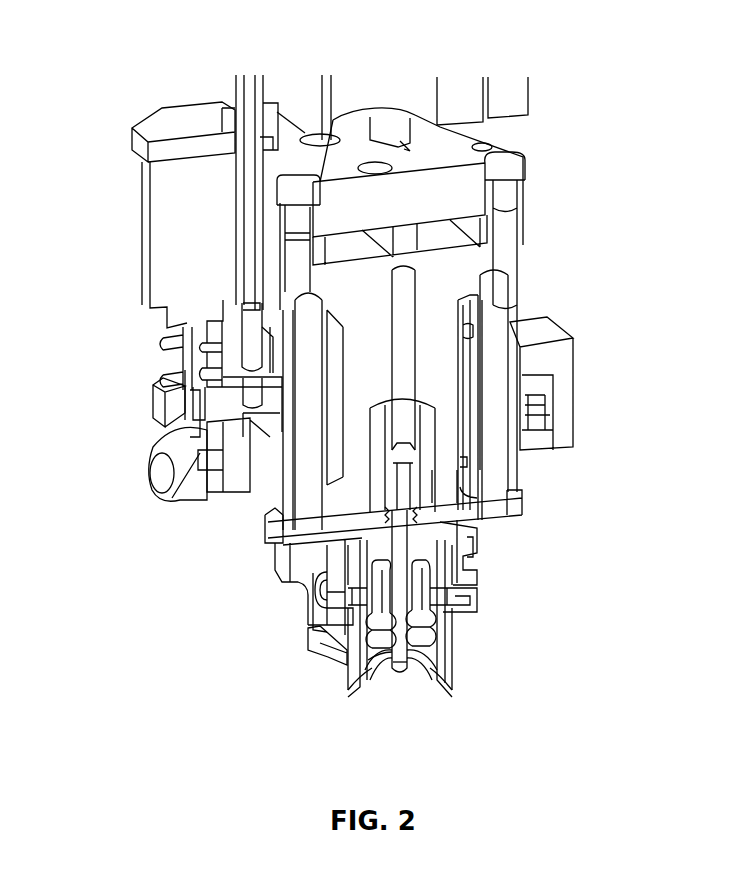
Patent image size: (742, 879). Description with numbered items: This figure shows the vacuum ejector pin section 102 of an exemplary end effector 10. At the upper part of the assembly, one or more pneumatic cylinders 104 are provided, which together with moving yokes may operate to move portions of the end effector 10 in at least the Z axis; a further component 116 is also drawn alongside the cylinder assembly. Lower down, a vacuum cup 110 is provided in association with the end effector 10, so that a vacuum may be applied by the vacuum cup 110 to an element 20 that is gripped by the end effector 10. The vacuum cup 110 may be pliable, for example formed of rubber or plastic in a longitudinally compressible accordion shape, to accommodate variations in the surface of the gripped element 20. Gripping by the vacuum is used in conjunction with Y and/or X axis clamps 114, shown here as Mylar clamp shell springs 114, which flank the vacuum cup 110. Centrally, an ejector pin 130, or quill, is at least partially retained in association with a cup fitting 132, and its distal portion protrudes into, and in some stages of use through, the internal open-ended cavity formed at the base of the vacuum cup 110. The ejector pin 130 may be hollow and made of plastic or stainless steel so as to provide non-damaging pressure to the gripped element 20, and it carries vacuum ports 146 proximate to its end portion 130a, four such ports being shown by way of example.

The end effector 10 is at (457, 88).
The vacuum ejector pin section 102 is at (703, 149).
The pneumatic cylinder 104 is at (155, 258).
The clamp 116 is at (153, 402).
The cup fitting 132 is at (415, 552).
The vacuum cup 110 is at (422, 592).
The Mylar clamp shell spring 114 is at (447, 642).
The element 20 is at (337, 650).
The vacuum port 146 is at (395, 663).
The ejector pin 130 is at (440, 672).
The end portion 130a is at (404, 670).